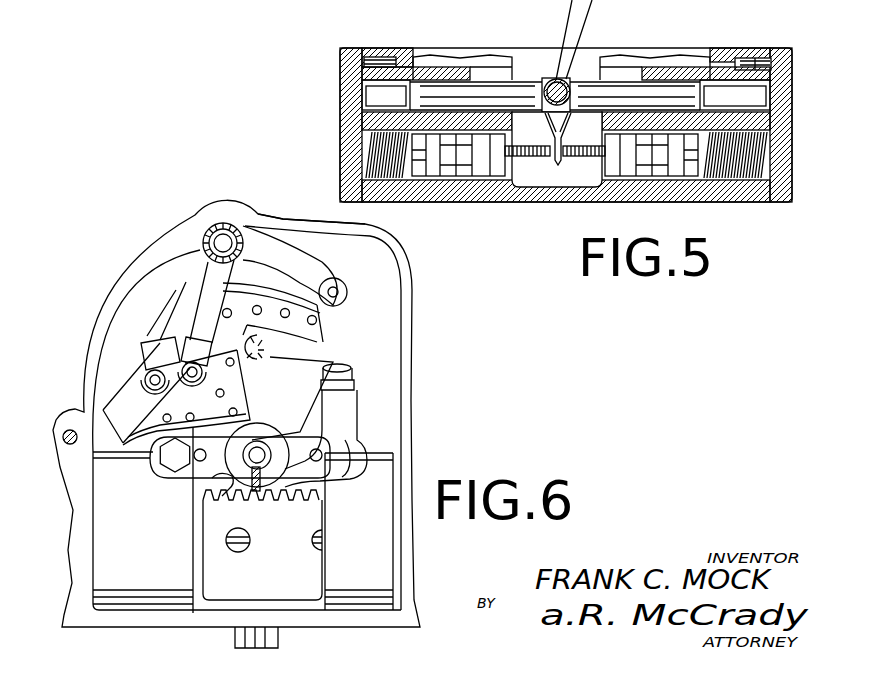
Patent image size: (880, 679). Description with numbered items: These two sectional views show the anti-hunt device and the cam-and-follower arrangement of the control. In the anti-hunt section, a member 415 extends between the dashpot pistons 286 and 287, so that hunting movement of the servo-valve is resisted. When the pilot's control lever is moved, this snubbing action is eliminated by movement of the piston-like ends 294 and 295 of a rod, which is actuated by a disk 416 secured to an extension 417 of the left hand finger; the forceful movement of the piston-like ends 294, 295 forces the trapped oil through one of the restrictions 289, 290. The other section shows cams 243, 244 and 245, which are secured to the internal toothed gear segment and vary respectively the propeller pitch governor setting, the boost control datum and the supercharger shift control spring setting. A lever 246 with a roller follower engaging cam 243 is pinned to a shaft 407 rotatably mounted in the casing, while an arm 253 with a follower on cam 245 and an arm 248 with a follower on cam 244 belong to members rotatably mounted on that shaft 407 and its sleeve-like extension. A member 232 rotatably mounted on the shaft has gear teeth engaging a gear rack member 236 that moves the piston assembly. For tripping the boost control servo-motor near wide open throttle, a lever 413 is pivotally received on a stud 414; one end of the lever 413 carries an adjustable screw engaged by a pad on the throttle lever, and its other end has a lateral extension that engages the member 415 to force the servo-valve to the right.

In FIG. 5, the restriction 289 is at (368, 57).
In FIG. 5, the restriction 290 is at (762, 52).
In FIG. 5, the piston-like end 294 is at (432, 96).
In FIG. 5, the piston-like end 295 is at (664, 90).
In FIG. 5, the disk 416 is at (568, 76).
In FIG. 5, the extension 417 is at (584, 11).
In FIG. 5, the member 415 is at (557, 162).
In FIG. 6, the member 415 is at (206, 481).
In FIG. 5, the dashpot piston 286 is at (477, 170).
In FIG. 5, the dashpot piston 287 is at (639, 172).
In FIG. 6, the shaft 407 is at (228, 243).
In FIG. 6, the lever 246 is at (302, 231).
In FIG. 6, the arm 248 is at (212, 290).
In FIG. 6, the cam 243 is at (288, 287).
In FIG. 6, the arm 253 is at (175, 330).
In FIG. 6, the cam 245 is at (133, 347).
In FIG. 6, the cam 244 is at (103, 377).
In FIG. 6, the stud 414 is at (338, 364).
In FIG. 6, the lever 413 is at (342, 408).
In FIG. 6, the member 232 is at (212, 500).
In FIG. 6, the gear rack member 236 is at (311, 522).